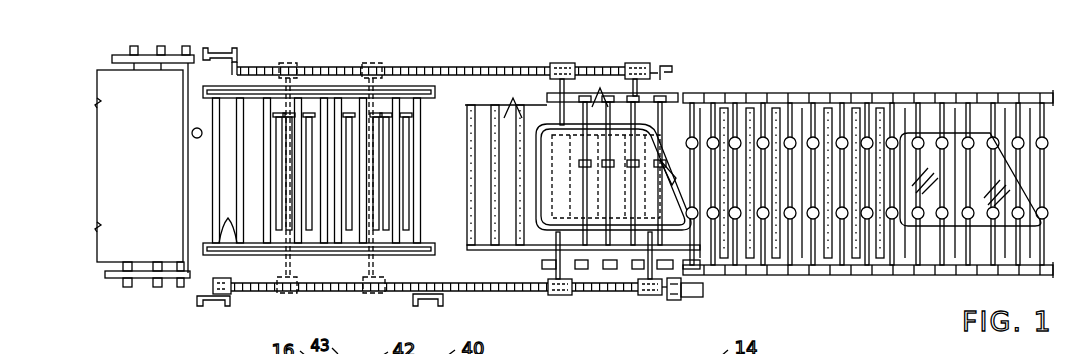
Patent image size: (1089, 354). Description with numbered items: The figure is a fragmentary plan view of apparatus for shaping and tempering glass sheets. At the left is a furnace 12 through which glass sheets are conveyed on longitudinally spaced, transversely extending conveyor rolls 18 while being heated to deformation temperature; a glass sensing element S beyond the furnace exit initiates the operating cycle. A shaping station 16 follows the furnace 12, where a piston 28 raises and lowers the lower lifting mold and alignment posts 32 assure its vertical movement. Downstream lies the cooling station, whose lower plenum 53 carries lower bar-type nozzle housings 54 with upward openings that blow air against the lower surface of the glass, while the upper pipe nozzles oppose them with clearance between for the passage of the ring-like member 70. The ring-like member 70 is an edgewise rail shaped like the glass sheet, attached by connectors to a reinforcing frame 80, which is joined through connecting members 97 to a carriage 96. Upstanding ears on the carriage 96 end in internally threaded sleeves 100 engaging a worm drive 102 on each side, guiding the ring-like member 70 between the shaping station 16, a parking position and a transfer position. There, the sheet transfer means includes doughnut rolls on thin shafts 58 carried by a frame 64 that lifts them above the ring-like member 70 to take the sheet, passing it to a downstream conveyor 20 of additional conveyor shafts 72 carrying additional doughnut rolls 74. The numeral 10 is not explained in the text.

The furnace 12 is at (150, 273).
The glass sensing element S is at (194, 128).
The shaping station 16 is at (347, 258).
The conveyor rolls 18 is at (231, 247).
The downstream conveyor 20 is at (782, 98).
The piston 28 is at (316, 86).
The alignment posts 32 is at (262, 160).
The lower plenum 53 is at (535, 120).
The lower bar-type nozzle housings 54 is at (513, 98).
The thin shafts 58 is at (601, 88).
The frame 64 is at (630, 273).
The ring-like member 70 is at (557, 160).
The apparatus 10 is at (528, 212).
The additional conveyor shafts 72 is at (920, 112).
The additional doughnut rolls 74 is at (957, 135).
The reinforcing frame 80 is at (533, 223).
The carriage 96 is at (653, 296).
The connecting members 97 is at (548, 283).
The internally threaded sleeves 100 is at (640, 70).
The worm drive 102 is at (490, 68).